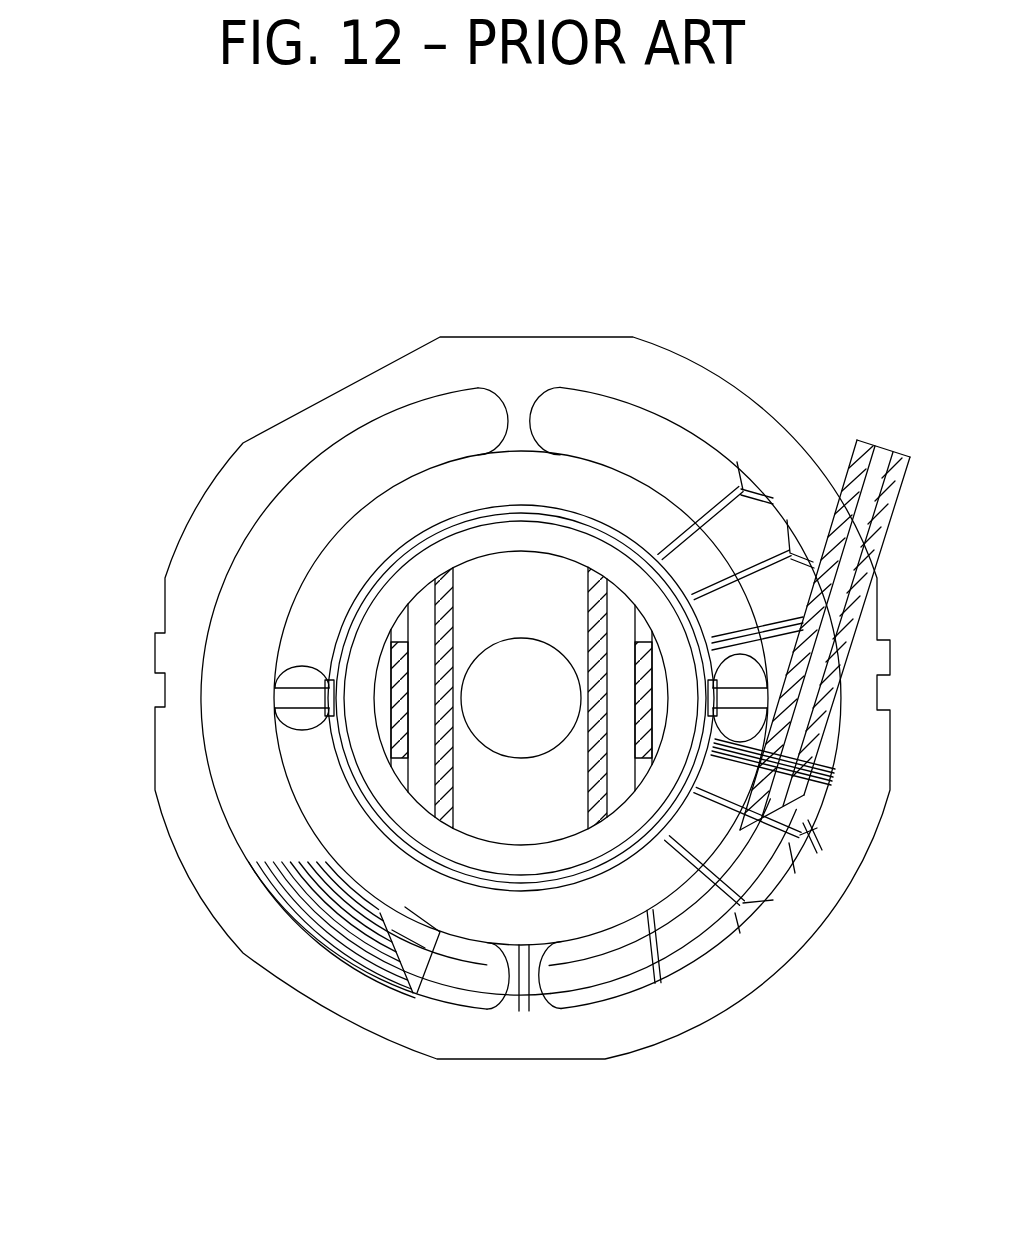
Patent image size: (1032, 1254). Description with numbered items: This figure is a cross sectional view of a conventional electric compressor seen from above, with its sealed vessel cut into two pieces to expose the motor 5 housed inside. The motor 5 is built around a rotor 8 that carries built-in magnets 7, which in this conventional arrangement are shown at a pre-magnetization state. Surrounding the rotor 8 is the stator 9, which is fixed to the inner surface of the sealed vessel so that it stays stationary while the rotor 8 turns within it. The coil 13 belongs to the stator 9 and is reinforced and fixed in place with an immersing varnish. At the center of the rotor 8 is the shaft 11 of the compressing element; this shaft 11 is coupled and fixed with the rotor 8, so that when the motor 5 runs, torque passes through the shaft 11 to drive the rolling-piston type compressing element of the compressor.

The motor 5 is at (182, 457).
The built-in magnets 7 is at (453, 770).
The rotor 8 is at (505, 593).
The stator 9 is at (462, 360).
The shaft 11 is at (527, 695).
The coil 13 is at (430, 500).